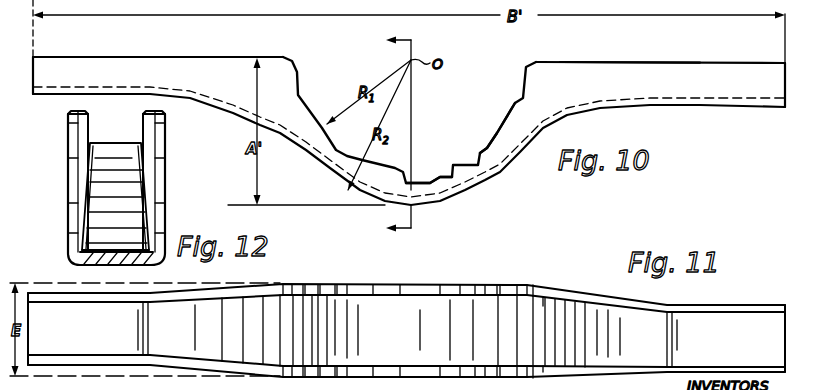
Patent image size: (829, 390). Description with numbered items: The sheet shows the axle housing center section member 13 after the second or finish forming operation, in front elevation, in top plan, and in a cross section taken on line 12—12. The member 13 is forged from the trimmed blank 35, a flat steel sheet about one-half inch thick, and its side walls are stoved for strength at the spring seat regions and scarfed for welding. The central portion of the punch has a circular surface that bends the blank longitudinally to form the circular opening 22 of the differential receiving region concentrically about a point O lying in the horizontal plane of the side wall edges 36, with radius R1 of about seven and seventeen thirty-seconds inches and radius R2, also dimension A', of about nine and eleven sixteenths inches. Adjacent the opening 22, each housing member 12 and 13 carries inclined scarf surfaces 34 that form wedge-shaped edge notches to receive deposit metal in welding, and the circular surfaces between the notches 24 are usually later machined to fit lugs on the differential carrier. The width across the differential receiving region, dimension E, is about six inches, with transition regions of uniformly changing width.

In FIG. 10, the housing member 12 is at (421, 136).
In FIG. 10, the axle housing member 13 is at (567, 80).
In FIG. 12, the axle housing member 13 is at (167, 163).
In FIG. 11, the axle housing member 13 is at (373, 279).
In FIG. 10, the circular opening 22 is at (494, 131).
In FIG. 12, the circular opening 22 is at (73, 188).
In FIG. 10, the notch 24 is at (434, 181).
In FIG. 12, the notch 24 is at (73, 243).
In FIG. 11, the notch 24 is at (492, 389).
In FIG. 10, the inclined scarf surface 34 is at (292, 60).
In FIG. 12, the inclined scarf surface 34 is at (160, 115).
In FIG. 10, the trimmed blank 35 is at (127, 63).
In FIG. 10, the side wall edge 36 is at (213, 56).